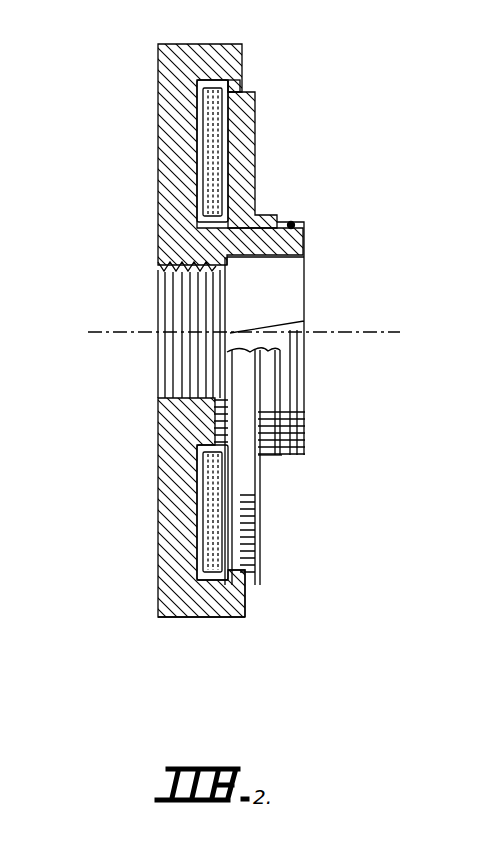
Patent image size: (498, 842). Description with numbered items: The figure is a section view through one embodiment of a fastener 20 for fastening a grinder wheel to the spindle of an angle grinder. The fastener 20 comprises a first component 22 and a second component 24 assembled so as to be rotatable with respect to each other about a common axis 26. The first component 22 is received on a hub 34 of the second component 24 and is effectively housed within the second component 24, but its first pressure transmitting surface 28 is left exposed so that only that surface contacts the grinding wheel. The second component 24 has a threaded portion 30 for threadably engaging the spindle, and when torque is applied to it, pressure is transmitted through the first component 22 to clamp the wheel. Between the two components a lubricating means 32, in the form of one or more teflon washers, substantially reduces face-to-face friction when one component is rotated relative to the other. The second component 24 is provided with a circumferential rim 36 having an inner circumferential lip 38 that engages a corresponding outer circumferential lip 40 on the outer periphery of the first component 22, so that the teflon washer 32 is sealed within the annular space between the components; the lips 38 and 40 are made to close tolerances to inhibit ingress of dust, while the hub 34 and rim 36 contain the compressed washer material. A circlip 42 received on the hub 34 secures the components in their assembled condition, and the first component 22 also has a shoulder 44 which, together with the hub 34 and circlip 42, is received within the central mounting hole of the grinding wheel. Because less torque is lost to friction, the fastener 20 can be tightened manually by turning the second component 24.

The fastener 20 is at (283, 138).
The first component 22 is at (246, 188).
The second component 24 is at (185, 108).
The common axis 26 is at (122, 335).
The first pressure transmitting surface 28 is at (258, 540).
The threaded portion 30 is at (182, 270).
The lubricating means 32 is at (203, 160).
The hub 34 is at (306, 246).
The circumferential rim 36 is at (187, 599).
The inner circumferential lip 38 is at (247, 575).
The outer circumferential lip 40 is at (233, 618).
The circlip 42 is at (308, 396).
The shoulder 44 is at (266, 455).